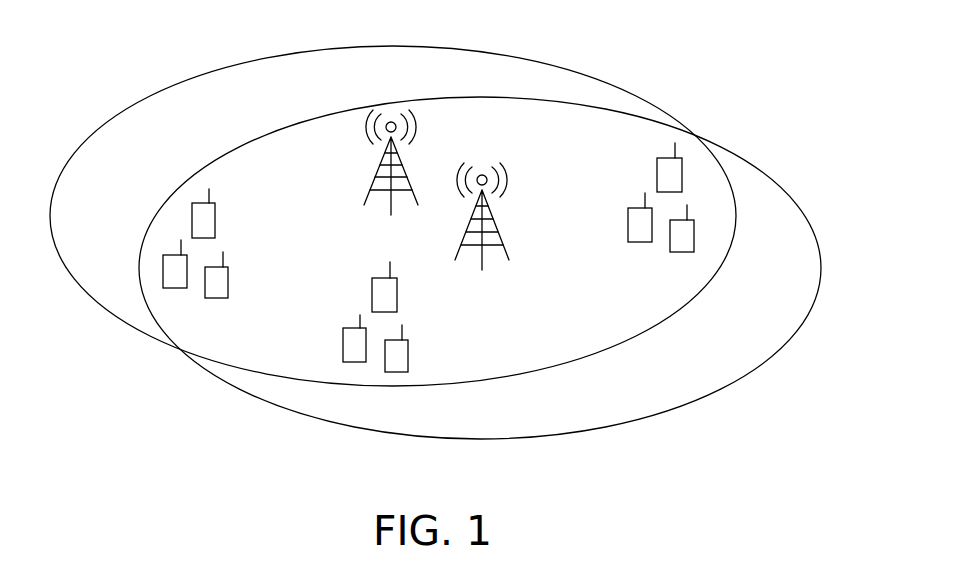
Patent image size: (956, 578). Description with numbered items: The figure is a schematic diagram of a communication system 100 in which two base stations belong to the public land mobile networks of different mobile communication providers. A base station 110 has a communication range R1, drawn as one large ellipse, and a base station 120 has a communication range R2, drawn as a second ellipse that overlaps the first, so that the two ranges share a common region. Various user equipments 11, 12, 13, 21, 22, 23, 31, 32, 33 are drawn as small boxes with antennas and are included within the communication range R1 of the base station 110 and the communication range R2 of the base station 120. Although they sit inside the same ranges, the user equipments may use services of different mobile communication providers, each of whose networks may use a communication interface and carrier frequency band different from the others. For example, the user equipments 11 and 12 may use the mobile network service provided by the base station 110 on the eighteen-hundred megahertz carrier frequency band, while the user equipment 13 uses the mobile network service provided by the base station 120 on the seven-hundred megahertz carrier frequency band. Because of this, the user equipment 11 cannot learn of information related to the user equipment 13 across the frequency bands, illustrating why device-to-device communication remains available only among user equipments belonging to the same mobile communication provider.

The communication system 100 is at (769, 424).
The base station 110 is at (373, 182).
The base station 120 is at (466, 238).
The communication range R1 is at (594, 73).
The communication range R2 is at (759, 166).
The user equipment 11 is at (192, 210).
The user equipment 12 is at (163, 272).
The user equipment 13 is at (228, 278).
The user equipment 21 is at (397, 297).
The user equipment 22 is at (343, 344).
The user equipment 23 is at (408, 356).
The user equipment 31 is at (657, 166).
The user equipment 32 is at (628, 229).
The user equipment 33 is at (694, 240).